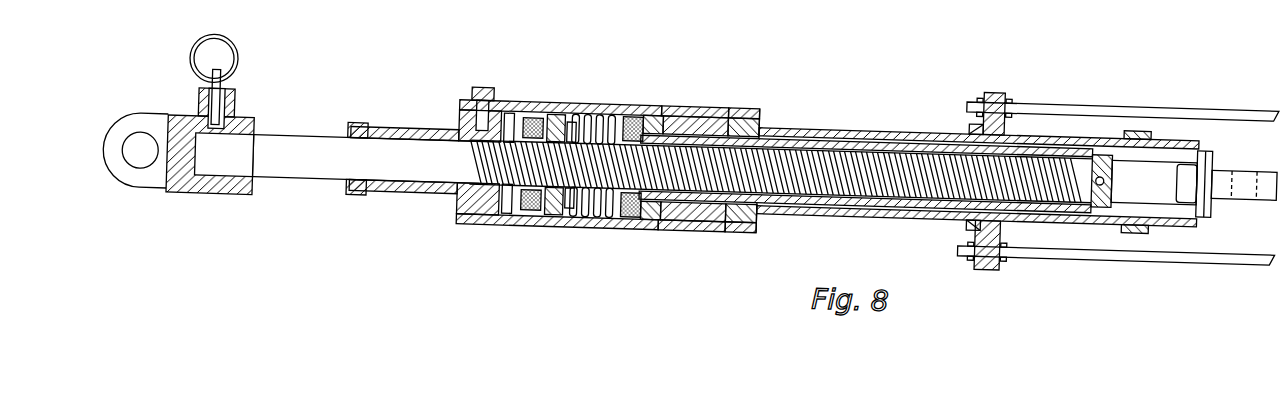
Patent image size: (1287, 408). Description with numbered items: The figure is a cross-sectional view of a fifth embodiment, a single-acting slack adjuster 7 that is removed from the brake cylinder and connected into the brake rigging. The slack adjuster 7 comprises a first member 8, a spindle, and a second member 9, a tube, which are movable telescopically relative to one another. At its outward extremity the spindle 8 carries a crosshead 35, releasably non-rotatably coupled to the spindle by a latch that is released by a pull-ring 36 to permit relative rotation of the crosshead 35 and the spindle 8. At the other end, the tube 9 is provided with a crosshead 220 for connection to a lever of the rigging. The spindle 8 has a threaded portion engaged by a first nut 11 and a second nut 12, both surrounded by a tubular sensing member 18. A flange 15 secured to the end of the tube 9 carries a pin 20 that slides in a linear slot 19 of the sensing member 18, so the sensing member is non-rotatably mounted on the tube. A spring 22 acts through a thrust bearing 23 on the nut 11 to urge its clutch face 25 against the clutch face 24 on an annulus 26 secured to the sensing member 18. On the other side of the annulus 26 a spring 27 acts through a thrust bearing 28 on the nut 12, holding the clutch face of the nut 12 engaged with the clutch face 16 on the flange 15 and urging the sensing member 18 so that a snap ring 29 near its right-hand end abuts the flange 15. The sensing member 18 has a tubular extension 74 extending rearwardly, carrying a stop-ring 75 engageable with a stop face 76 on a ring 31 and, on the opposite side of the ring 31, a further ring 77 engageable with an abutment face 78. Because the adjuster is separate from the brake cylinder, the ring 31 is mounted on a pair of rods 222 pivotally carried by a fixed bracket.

The slack adjuster 7 is at (623, 93).
The first member 8 is at (290, 142).
The second member 9 is at (1103, 192).
The first nut 11 is at (532, 112).
The second nut 12 is at (625, 200).
The flange 15 is at (680, 218).
The clutch face 16 is at (645, 212).
The sensing member 18 is at (590, 216).
The linear slot 19 is at (722, 101).
The pin 20 is at (677, 104).
The spring 22 is at (506, 226).
The thrust bearing 23 is at (530, 212).
The clutch face 24 is at (568, 216).
The clutch face 25 is at (555, 224).
The annulus 26 is at (560, 112).
The spring 27 is at (630, 114).
The thrust bearing 28 is at (638, 207).
The snap ring 29 is at (740, 226).
The ring 31 is at (995, 80).
The crosshead 35 is at (145, 125).
The pull-ring 36 is at (234, 60).
The tubular extension 74 is at (835, 120).
The stop-ring 75 is at (1140, 214).
The stop face 76 is at (1004, 223).
The further ring 77 is at (968, 112).
The abutment face 78 is at (975, 228).
The crosshead 220 is at (1215, 180).
The rods 222 is at (1162, 90).